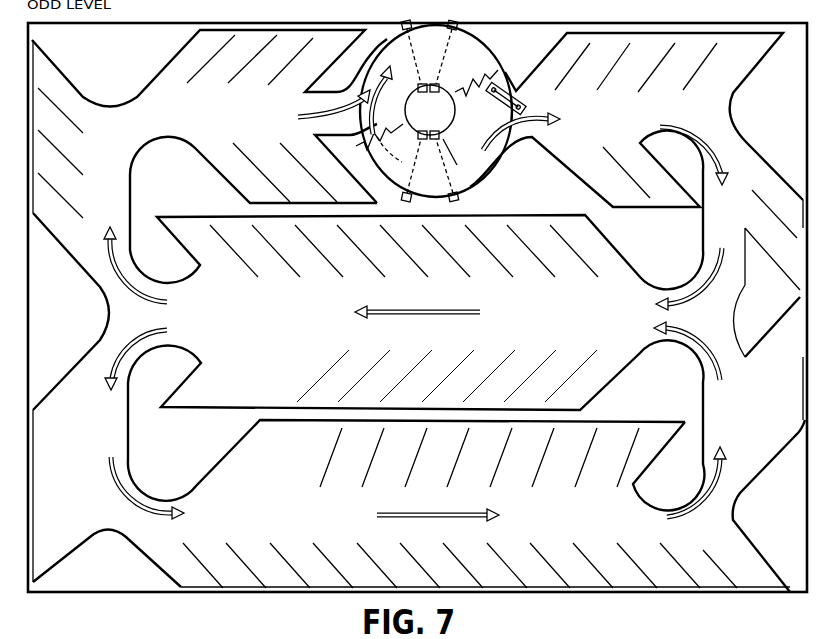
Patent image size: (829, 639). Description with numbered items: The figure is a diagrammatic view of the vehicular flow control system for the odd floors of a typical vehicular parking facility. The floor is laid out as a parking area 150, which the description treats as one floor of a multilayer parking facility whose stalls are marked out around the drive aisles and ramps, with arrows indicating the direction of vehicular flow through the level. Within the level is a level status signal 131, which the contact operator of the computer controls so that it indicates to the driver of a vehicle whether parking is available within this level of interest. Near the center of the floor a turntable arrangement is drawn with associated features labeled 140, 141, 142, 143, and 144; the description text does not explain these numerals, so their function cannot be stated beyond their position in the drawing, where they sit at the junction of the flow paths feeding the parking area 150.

The level status signal 131 is at (498, 102).
The turntable 140 is at (447, 84).
The turntable entry position 141 is at (413, 31).
The travel path arrow 142 is at (305, 118).
The turntable exit position 143 is at (427, 143).
The turntable stop 144 is at (462, 156).
The parking area 150 is at (213, 76).